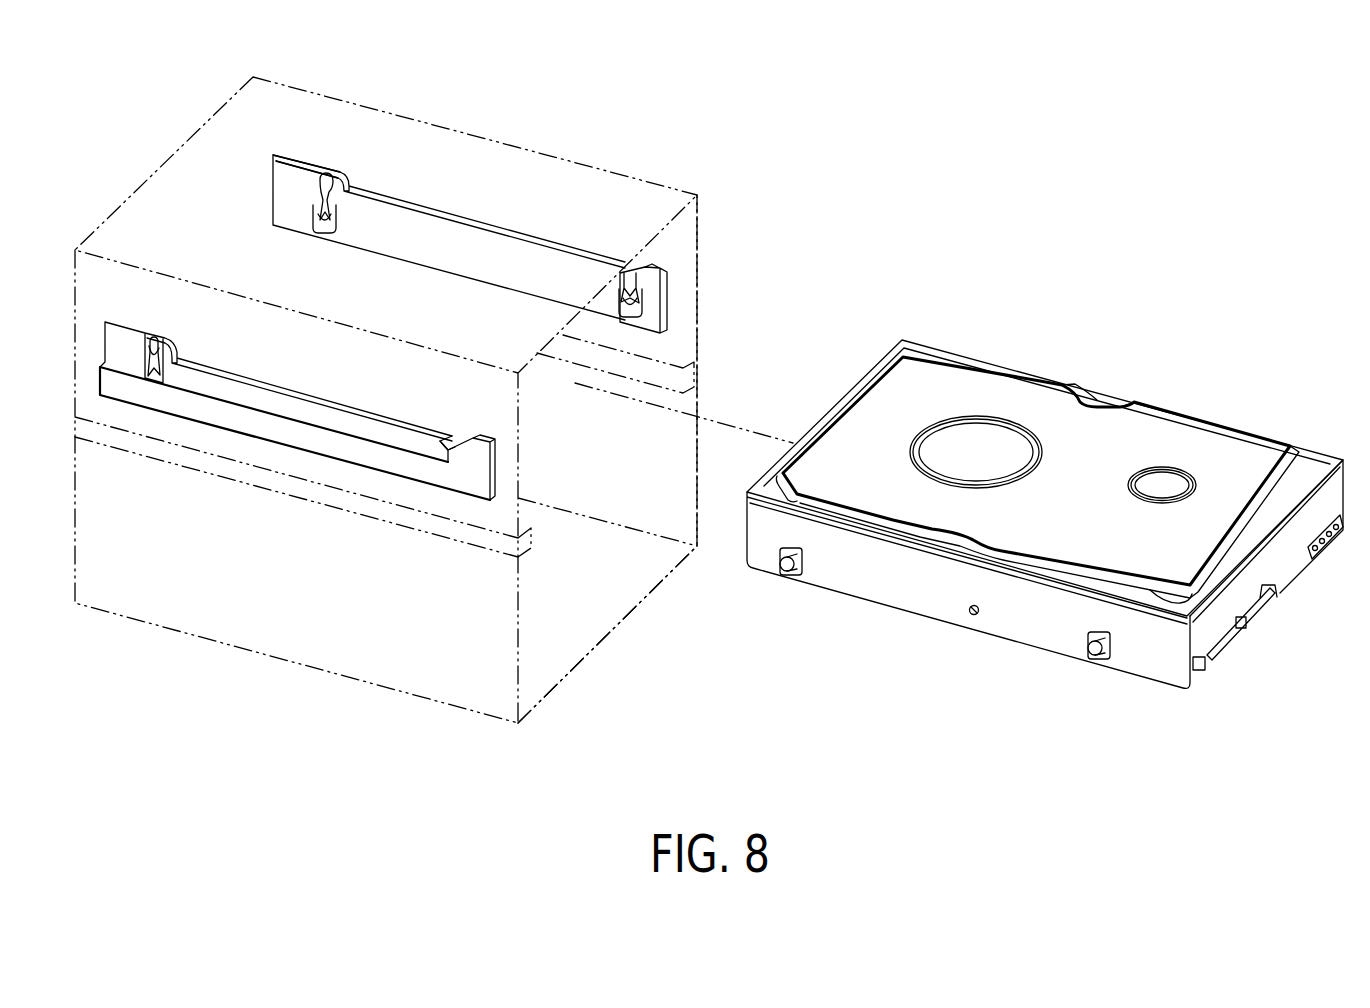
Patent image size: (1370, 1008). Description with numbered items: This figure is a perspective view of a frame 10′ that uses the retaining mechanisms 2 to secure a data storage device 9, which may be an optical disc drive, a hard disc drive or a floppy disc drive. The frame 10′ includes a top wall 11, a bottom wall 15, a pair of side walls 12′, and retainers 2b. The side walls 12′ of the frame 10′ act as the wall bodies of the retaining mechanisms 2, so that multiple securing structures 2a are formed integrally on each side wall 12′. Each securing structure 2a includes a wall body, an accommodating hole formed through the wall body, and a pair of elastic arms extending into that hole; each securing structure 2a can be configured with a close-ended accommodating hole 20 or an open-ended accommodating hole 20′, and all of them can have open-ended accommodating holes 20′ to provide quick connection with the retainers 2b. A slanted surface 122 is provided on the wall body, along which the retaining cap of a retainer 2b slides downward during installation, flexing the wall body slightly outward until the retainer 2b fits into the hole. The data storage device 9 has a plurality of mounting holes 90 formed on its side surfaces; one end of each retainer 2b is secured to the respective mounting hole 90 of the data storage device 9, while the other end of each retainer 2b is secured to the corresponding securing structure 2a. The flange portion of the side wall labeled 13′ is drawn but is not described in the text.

The frame 10′ is at (518, 142).
The top wall 11 is at (664, 239).
The bottom wall 15 is at (608, 636).
The side wall 12′ is at (465, 252).
The slanted surface 122 is at (310, 170).
The rail flange 13′ is at (268, 428).
The retaining mechanism 2 is at (627, 493).
The securing structure 2a is at (299, 203).
The retainer 2b is at (781, 573).
The accommodating hole 20 is at (339, 189).
The accommodating hole 20′ is at (628, 275).
The data storage device 9 is at (1171, 407).
The mounting hole 90 is at (973, 618).